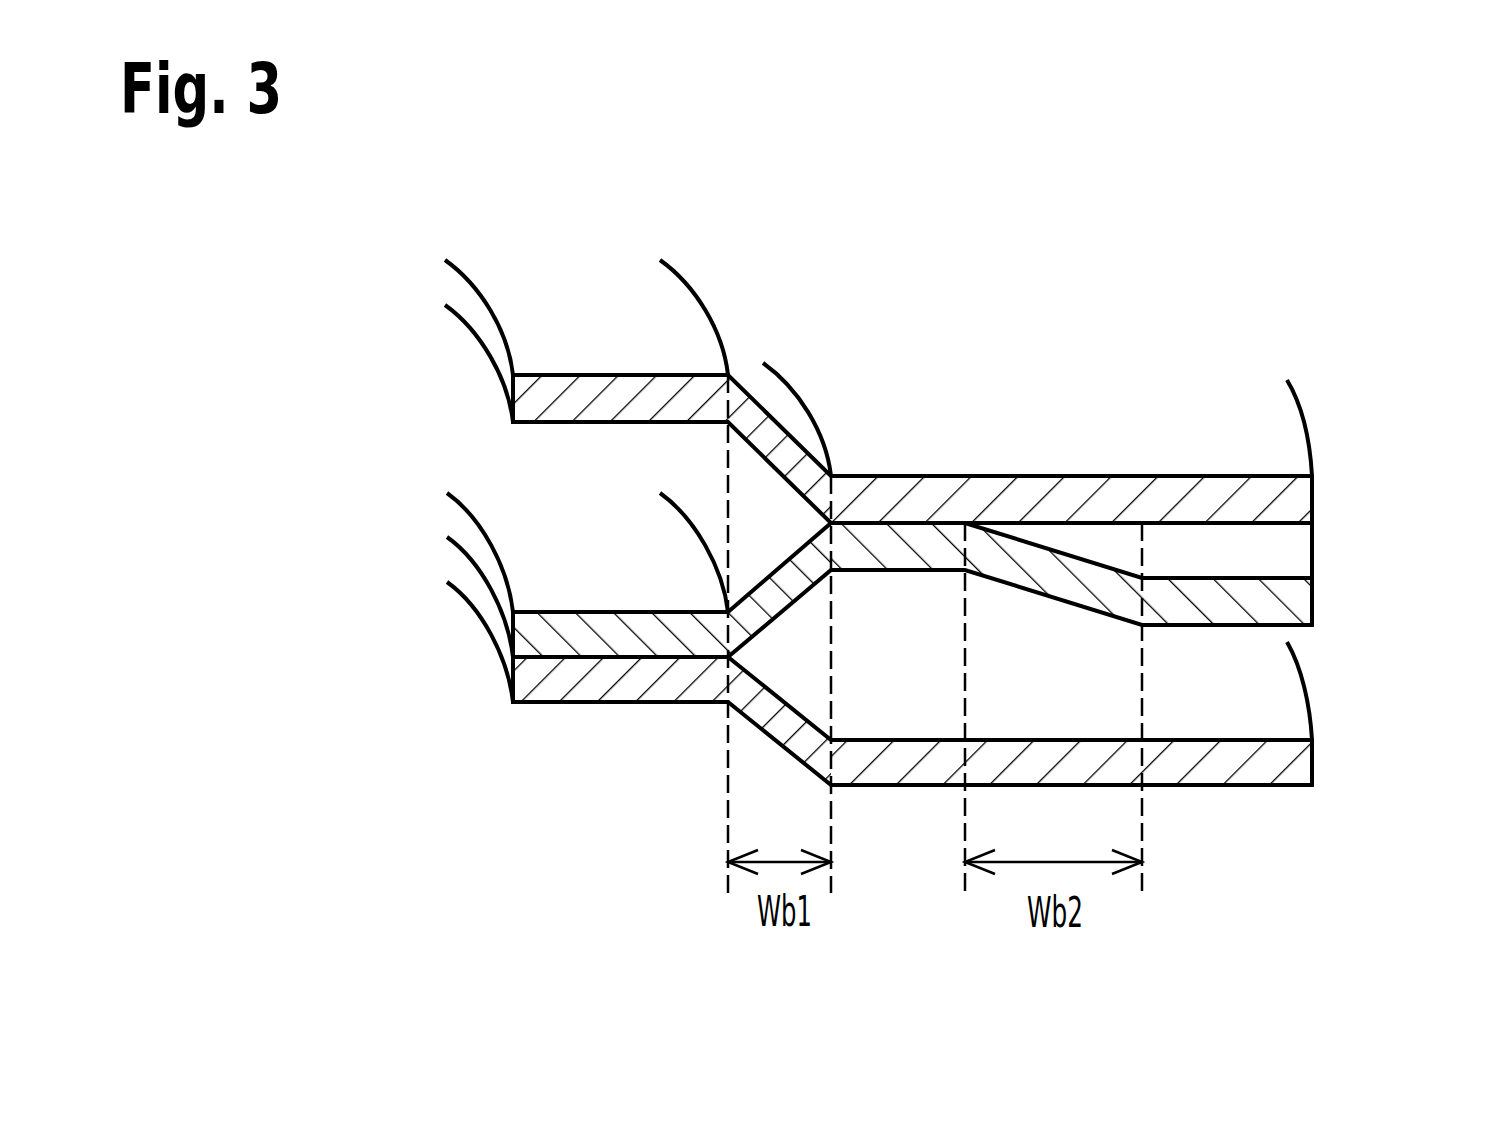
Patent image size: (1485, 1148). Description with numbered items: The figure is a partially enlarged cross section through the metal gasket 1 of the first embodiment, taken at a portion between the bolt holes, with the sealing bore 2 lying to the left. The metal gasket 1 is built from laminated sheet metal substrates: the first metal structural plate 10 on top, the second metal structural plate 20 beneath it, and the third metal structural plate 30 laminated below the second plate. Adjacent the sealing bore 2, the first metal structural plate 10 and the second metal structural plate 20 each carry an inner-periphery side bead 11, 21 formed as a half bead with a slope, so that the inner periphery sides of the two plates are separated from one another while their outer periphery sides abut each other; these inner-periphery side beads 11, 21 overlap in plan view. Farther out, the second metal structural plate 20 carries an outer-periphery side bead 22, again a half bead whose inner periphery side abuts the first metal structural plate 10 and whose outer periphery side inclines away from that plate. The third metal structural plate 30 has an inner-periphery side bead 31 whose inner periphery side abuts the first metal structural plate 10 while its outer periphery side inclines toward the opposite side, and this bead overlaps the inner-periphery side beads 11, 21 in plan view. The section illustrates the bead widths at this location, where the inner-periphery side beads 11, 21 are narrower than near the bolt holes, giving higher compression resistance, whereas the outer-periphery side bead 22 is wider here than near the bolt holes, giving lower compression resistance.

The metal gasket 1 is at (621, 369).
The sealing bore 2 is at (341, 627).
The first metal structural plate 10 is at (1312, 492).
The inner-periphery side bead 11 is at (770, 445).
The second metal structural plate 20 is at (1312, 597).
The inner-periphery side bead 21 is at (793, 587).
The outer-periphery side bead 22 is at (1103, 610).
The third metal structural plate 30 is at (1312, 763).
The inner-periphery side bead 31 is at (758, 722).